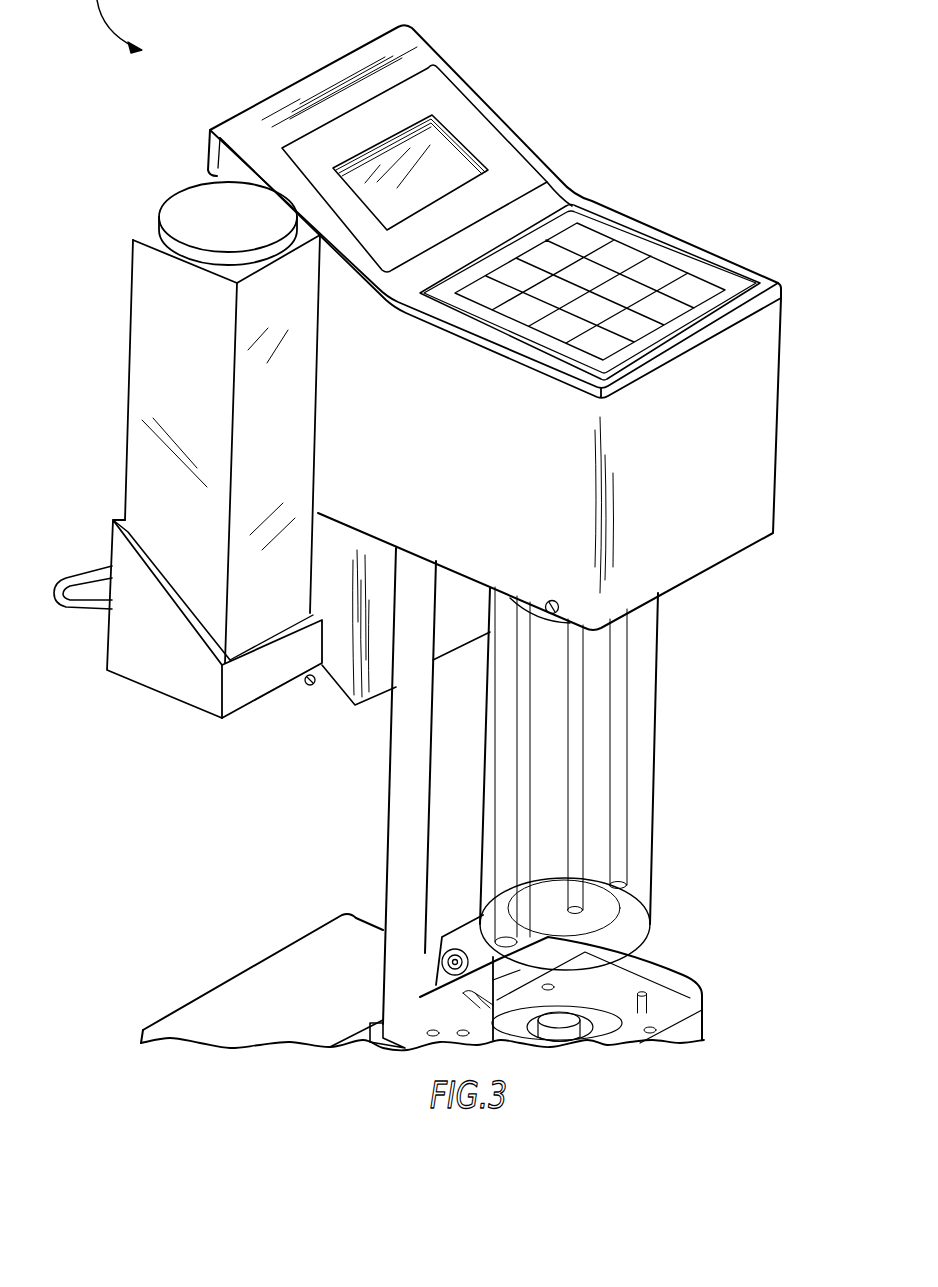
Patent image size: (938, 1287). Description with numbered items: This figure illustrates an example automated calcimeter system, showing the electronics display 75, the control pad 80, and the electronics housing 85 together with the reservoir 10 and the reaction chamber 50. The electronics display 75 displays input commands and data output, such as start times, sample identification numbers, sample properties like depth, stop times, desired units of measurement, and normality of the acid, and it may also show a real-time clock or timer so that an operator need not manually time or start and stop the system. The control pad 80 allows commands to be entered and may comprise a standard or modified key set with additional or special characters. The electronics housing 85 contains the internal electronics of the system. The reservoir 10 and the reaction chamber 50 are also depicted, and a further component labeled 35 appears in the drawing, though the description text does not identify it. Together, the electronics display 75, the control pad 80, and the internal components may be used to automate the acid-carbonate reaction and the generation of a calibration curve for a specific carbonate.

The reservoir 10 is at (130, 340).
The container holder handle 35 is at (75, 615).
The reaction chamber 50 is at (652, 807).
The electronics display 75 is at (450, 150).
The control pad 80 is at (598, 273).
The electronics housing 85 is at (757, 430).